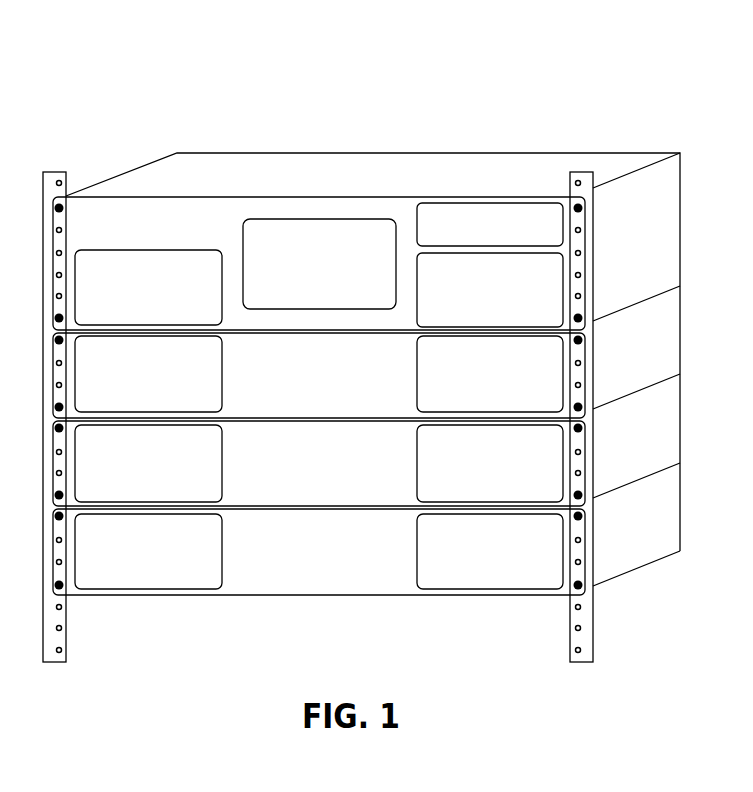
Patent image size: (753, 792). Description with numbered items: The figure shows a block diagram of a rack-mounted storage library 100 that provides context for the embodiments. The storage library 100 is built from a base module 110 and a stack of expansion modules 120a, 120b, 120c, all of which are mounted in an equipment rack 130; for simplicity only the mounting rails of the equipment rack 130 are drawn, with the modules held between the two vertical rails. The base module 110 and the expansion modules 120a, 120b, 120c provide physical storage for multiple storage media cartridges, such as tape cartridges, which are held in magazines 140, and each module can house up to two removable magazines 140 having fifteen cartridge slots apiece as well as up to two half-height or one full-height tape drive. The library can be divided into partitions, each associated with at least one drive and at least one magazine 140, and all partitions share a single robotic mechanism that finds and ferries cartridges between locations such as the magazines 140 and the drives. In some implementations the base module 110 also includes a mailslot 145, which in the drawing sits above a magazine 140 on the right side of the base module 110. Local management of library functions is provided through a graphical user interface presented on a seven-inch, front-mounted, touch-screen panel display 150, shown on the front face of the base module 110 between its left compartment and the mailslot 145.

The rack-mounted storage library 100 is at (529, 58).
The base module 110 is at (225, 236).
The expansion module 120a is at (337, 405).
The expansion module 120b is at (337, 493).
The expansion module 120c is at (337, 581).
The equipment rack 130 is at (593, 640).
The magazine 140 is at (505, 310).
The mailslot 145 is at (543, 235).
The touch-screen panel display 150 is at (332, 283).